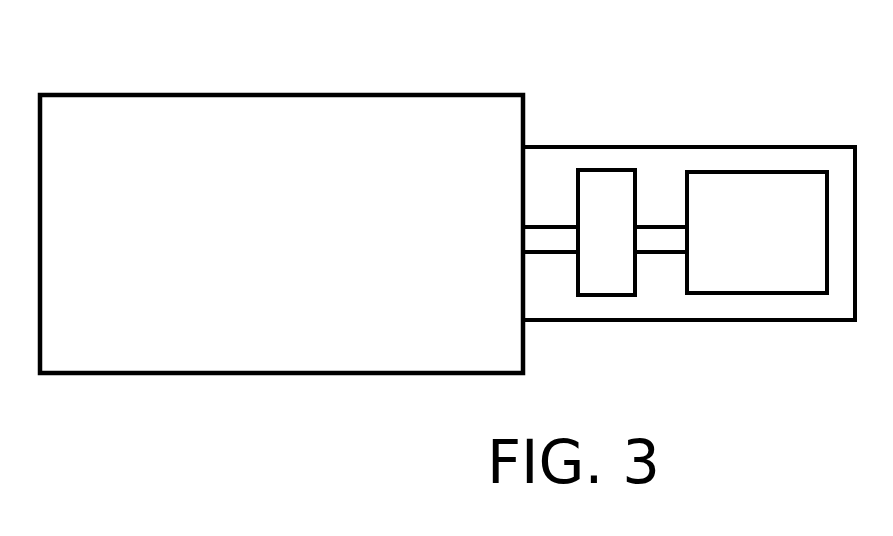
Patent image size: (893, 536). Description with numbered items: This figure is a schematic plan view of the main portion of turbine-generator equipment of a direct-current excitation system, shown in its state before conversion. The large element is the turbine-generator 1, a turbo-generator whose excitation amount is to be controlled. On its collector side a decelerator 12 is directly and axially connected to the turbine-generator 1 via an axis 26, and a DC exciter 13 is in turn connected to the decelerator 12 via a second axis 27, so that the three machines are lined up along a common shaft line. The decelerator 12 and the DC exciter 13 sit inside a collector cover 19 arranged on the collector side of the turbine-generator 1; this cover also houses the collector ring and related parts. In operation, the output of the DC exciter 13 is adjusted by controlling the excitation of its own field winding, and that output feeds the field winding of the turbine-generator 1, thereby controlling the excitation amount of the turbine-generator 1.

The turbine-generator 1 is at (282, 95).
The collector cover 19 is at (762, 147).
The decelerator 12 is at (607, 295).
The DC exciter 13 is at (762, 293).
The axis 26 is at (549, 224).
The axis 27 is at (663, 224).